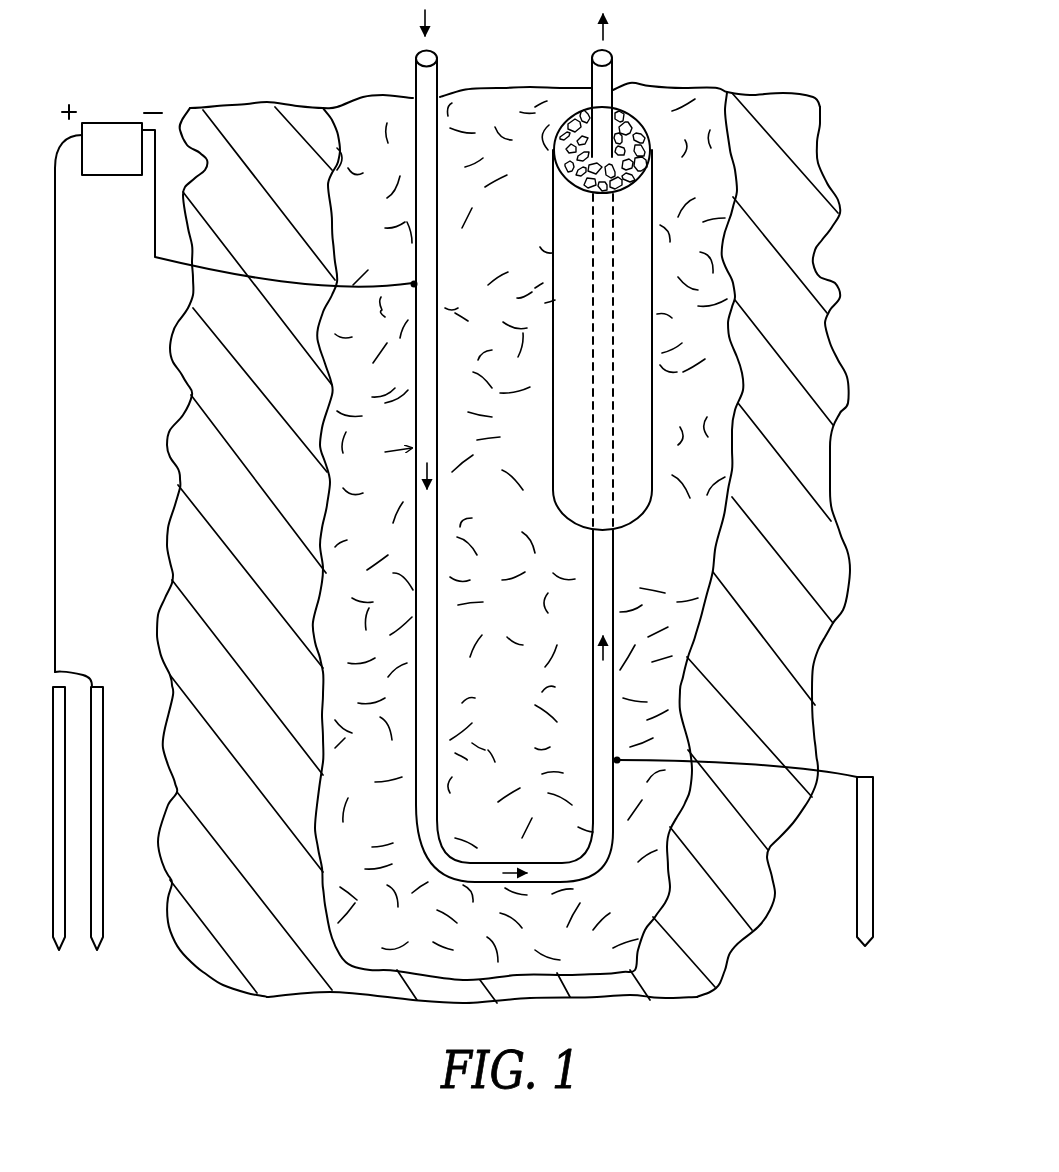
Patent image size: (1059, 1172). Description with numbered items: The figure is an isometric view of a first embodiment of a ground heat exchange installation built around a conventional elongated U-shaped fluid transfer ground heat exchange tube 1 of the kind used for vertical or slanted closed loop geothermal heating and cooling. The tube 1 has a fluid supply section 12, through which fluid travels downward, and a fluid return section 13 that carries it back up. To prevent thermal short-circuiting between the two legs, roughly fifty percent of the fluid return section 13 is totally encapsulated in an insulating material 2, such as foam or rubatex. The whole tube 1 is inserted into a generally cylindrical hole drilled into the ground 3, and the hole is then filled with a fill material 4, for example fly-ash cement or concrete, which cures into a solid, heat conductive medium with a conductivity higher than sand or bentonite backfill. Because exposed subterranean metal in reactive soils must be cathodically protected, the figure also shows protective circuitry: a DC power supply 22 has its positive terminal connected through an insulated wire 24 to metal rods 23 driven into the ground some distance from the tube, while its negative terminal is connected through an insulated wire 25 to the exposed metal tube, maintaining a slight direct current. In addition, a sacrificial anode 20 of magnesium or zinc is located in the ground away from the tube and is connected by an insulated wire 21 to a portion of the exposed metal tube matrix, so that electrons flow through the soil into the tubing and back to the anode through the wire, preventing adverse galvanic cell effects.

The ground heat exchange tube 1 is at (421, 84).
The insulating material 2 is at (632, 120).
The ground 3 is at (813, 277).
The fill material 4 is at (687, 97).
The fluid supply section 12 is at (387, 454).
The fluid return section 13 is at (615, 542).
The sacrificial anode 20 is at (873, 830).
The insulated wire 21 is at (827, 767).
The DC power supply 22 is at (108, 122).
The metal rods 23 is at (100, 942).
The insulated wire 24 is at (55, 448).
The insulated wire 25 is at (153, 208).